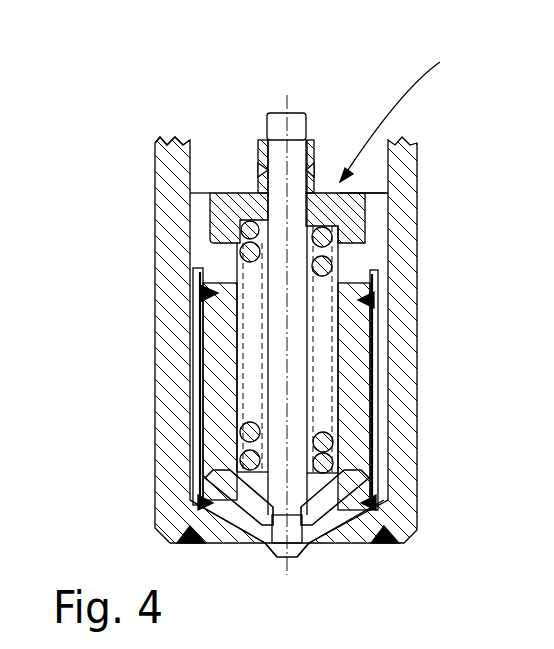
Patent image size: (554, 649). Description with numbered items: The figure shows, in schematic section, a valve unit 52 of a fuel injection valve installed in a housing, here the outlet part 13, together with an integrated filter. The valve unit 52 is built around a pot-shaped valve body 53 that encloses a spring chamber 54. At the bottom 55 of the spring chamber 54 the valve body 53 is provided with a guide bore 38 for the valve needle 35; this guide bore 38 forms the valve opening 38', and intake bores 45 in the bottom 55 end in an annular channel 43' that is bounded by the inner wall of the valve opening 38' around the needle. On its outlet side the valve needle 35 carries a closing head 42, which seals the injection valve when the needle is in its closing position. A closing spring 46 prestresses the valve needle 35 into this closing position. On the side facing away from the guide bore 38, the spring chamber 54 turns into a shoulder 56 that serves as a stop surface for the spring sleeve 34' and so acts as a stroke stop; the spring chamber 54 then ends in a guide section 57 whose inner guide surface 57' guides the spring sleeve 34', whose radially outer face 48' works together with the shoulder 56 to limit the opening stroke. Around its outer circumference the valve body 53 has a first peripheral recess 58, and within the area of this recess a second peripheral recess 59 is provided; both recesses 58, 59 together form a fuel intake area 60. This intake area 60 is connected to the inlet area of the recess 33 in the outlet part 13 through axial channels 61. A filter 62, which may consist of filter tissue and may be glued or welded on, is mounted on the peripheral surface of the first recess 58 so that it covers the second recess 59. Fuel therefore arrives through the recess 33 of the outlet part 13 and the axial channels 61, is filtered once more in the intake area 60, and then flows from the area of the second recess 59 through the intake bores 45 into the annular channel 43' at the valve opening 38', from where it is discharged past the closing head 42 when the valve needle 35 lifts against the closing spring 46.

The outlet part 13 is at (176, 332).
The recess 33 is at (210, 172).
The spring sleeve 34' is at (249, 132).
The valve needle 35 is at (280, 148).
The guide bore 38 is at (249, 563).
The valve opening 38' is at (260, 582).
The closing head 42 is at (290, 560).
The annular channel 43' is at (332, 568).
The intake bores 45 is at (222, 488).
The closing spring 46 is at (240, 428).
The radially outer face 48' is at (154, 239).
The valve unit 52 is at (400, 109).
The valve body 53 is at (228, 366).
The spring chamber 54 is at (338, 258).
The bottom 55 is at (345, 535).
The shoulder 56 is at (350, 222).
The guide section 57 is at (165, 357).
The inner guide surface 57' is at (429, 142).
The first peripheral recess 58 is at (372, 275).
The second peripheral recess 59 is at (375, 328).
The fuel intake area 60 is at (200, 395).
The axial channels 61 is at (215, 222).
The filter 62 is at (380, 405).